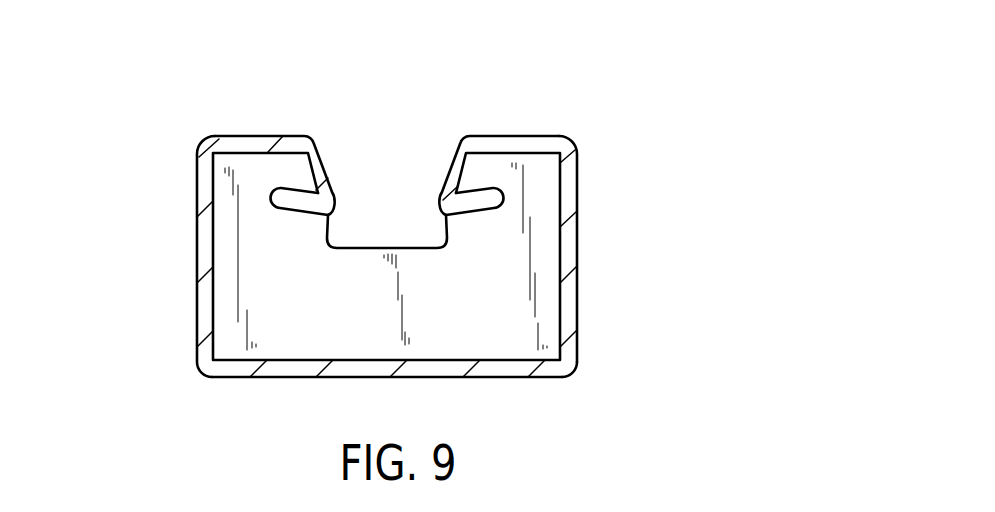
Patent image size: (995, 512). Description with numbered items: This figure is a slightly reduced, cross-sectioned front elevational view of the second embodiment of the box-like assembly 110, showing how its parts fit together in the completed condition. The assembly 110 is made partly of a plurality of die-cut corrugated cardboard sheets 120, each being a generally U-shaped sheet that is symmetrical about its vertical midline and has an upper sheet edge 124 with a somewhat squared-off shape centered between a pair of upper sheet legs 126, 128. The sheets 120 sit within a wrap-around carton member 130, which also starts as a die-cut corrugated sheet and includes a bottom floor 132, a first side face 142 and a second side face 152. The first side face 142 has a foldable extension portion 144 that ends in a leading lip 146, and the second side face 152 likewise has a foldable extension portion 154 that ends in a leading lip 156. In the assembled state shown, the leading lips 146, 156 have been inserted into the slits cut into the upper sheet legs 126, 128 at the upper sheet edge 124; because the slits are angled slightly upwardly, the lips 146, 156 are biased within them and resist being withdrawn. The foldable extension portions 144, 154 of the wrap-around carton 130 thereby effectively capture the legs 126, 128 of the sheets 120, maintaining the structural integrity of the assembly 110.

The assembly 110 is at (125, 164).
The die-cut corrugated cardboard sheet 120 is at (513, 252).
The upper sheet edge 124 is at (398, 247).
The first upper sheet leg 126 is at (263, 164).
The second upper sheet leg 128 is at (495, 167).
The wrap-around carton member 130 is at (577, 348).
The bottom floor 132 is at (273, 378).
The first side face 142 is at (205, 253).
The foldable extension portion 144 is at (293, 150).
The leading lip 146 is at (290, 203).
The second side face 152 is at (568, 262).
The foldable extension portion 154 is at (485, 145).
The leading lip 156 is at (465, 203).